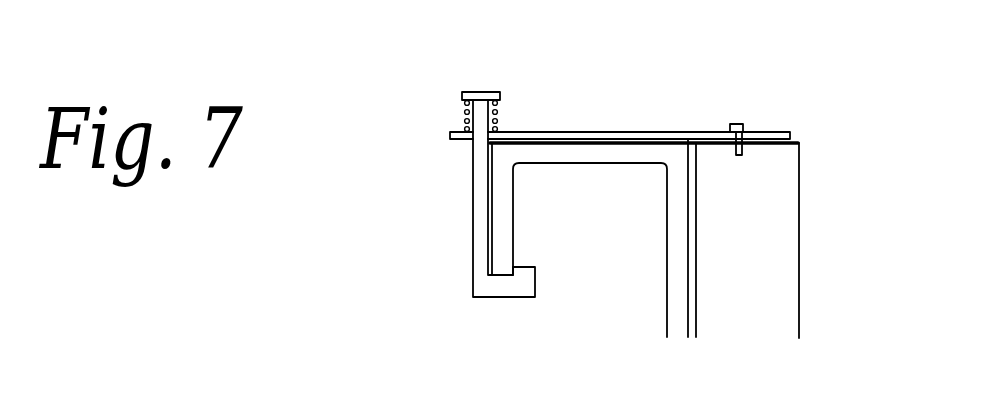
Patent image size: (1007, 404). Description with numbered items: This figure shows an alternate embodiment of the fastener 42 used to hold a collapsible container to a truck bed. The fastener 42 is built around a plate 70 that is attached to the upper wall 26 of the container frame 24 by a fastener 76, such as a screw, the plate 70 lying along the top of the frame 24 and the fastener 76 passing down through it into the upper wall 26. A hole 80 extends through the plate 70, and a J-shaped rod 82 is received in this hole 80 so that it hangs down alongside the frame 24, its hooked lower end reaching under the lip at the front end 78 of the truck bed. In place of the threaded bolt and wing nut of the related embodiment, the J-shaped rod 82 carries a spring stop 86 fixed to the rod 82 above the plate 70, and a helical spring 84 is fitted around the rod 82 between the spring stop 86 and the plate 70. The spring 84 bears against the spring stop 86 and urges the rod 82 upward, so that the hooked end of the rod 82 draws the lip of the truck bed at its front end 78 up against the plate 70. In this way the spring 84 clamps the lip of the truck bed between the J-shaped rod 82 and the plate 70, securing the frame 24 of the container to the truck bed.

The frame 24 is at (733, 227).
The upper wall 26 is at (796, 141).
The fastener 42 is at (618, 114).
The plate 70 is at (540, 131).
The fastener 76 is at (740, 123).
The front end 78 is at (679, 263).
The hole 80 is at (450, 136).
The J-shaped rod 82 is at (477, 215).
The helical spring 84 is at (462, 108).
The spring stop 86 is at (481, 92).